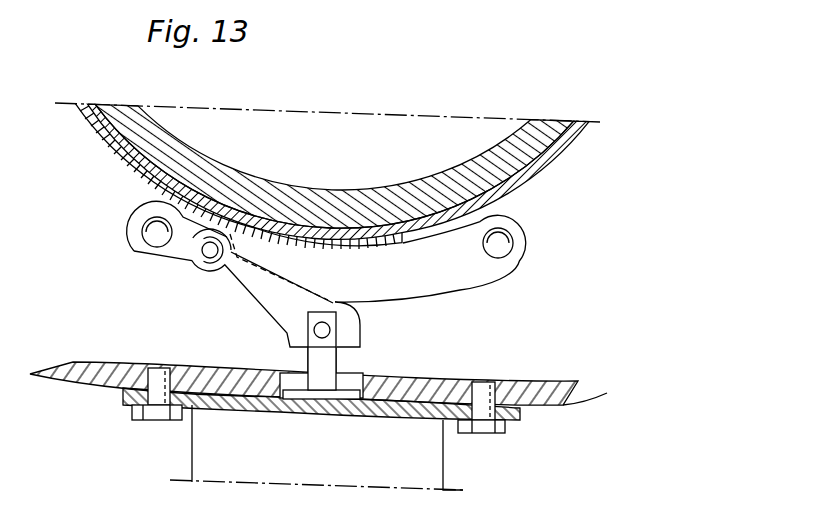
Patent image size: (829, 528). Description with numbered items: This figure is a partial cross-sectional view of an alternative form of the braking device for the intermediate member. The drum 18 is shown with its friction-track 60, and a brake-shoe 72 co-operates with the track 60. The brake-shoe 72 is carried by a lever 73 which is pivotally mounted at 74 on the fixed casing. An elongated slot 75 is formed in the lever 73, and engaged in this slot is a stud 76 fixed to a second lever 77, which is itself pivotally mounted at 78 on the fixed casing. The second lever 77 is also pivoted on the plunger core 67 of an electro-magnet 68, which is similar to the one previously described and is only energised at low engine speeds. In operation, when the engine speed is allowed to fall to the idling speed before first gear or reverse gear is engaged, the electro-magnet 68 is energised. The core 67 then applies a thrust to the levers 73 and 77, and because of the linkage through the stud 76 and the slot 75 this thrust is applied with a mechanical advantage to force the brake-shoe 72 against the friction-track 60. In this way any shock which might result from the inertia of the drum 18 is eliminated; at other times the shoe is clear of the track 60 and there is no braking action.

The drum 18 is at (150, 128).
The friction-track 60 is at (112, 137).
The brake-shoe 72 is at (303, 240).
The lever 73 is at (453, 282).
The pivot 74 is at (513, 252).
The elongated slot 75 is at (208, 252).
The stud 76 is at (199, 257).
The second lever 77 is at (262, 305).
The pivot 78 is at (150, 225).
The plunger core 67 is at (330, 330).
The electro-magnet 68 is at (205, 437).